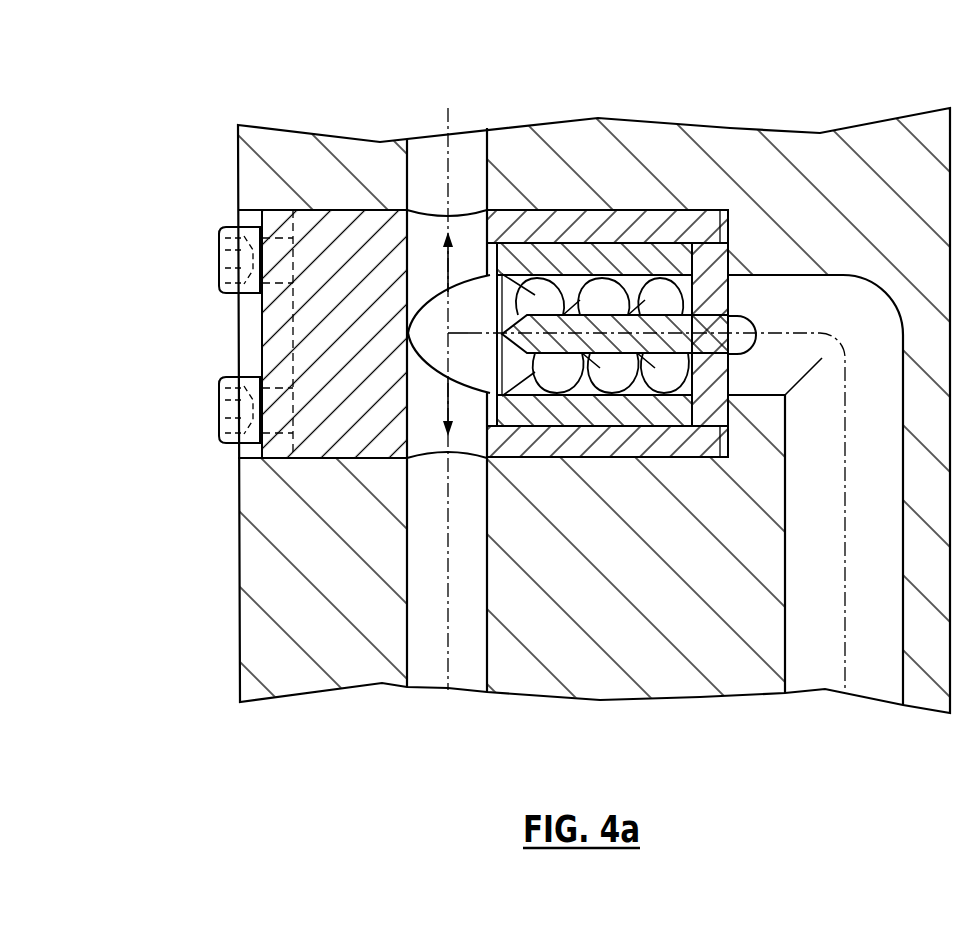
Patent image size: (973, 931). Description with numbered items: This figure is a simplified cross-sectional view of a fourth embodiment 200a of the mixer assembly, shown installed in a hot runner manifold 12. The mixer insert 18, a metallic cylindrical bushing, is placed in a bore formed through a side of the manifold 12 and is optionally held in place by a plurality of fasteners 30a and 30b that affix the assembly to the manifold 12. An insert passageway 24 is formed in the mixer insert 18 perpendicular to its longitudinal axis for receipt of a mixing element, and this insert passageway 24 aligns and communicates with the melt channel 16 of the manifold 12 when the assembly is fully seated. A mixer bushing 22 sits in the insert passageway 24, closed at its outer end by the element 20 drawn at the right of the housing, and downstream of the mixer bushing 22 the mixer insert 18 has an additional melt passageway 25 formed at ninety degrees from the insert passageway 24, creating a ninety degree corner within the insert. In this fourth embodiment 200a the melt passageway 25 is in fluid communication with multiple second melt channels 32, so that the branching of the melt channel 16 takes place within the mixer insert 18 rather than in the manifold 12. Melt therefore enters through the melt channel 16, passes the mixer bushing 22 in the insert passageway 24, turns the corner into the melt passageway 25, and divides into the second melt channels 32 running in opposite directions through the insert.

The hot runner manifold 12 is at (572, 118).
The melt channel 16 is at (889, 434).
The mixer insert 18 is at (370, 230).
The end cap 20 is at (705, 263).
The mixer bushing 22 is at (637, 247).
The insert passageway 24 is at (513, 250).
The melt passageway 25 is at (444, 415).
The fastener 30a is at (218, 245).
The fastener 30b is at (218, 427).
The second melt channels 32 is at (480, 184).
The fourth embodiment 200a is at (157, 331).